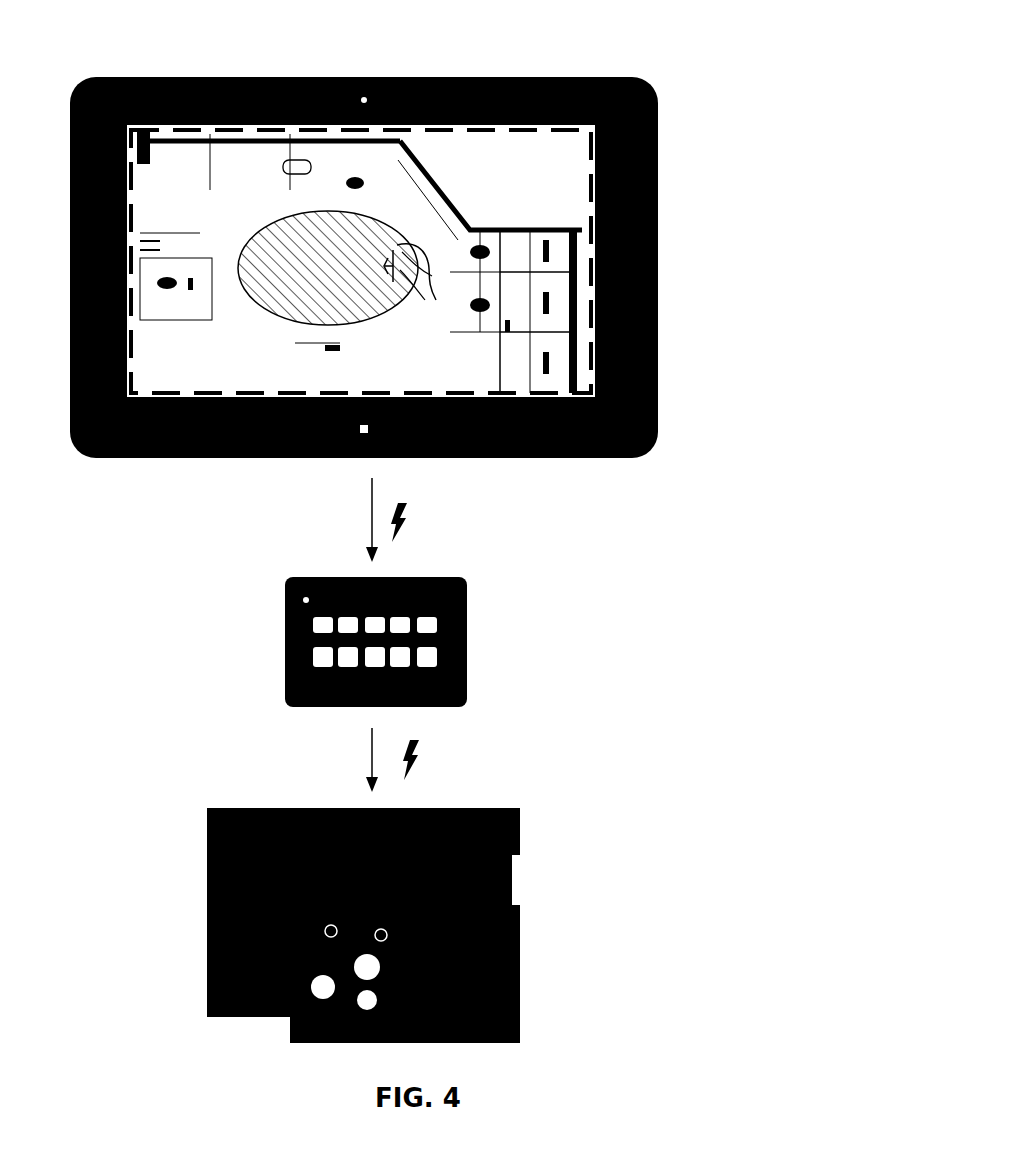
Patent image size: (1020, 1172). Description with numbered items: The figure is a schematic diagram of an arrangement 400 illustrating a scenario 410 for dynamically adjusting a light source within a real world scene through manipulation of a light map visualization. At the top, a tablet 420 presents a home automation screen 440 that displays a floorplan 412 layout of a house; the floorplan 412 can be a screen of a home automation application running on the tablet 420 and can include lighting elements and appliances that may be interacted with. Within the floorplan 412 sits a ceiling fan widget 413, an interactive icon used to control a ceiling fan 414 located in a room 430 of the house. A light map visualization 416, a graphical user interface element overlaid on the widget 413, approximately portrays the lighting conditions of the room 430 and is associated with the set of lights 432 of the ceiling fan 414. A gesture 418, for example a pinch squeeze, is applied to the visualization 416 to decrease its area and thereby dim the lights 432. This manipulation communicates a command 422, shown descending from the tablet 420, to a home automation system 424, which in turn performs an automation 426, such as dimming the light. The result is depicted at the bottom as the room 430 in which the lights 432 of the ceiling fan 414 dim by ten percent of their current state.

The system 400 is at (766, 27).
The scenario 410 is at (143, 32).
The floorplan 412 is at (395, 187).
The ceiling fan widget 413 is at (312, 262).
The ceiling fan 414 is at (240, 978).
The light map visualization 416 is at (246, 291).
The gesture 418 is at (426, 316).
The tablet 420 is at (658, 282).
The command 422 is at (405, 524).
The home automation system 424 is at (470, 643).
The automation 426 is at (420, 760).
The room 430 is at (332, 937).
The lights 432 is at (306, 999).
The home automation screen 440 is at (588, 377).